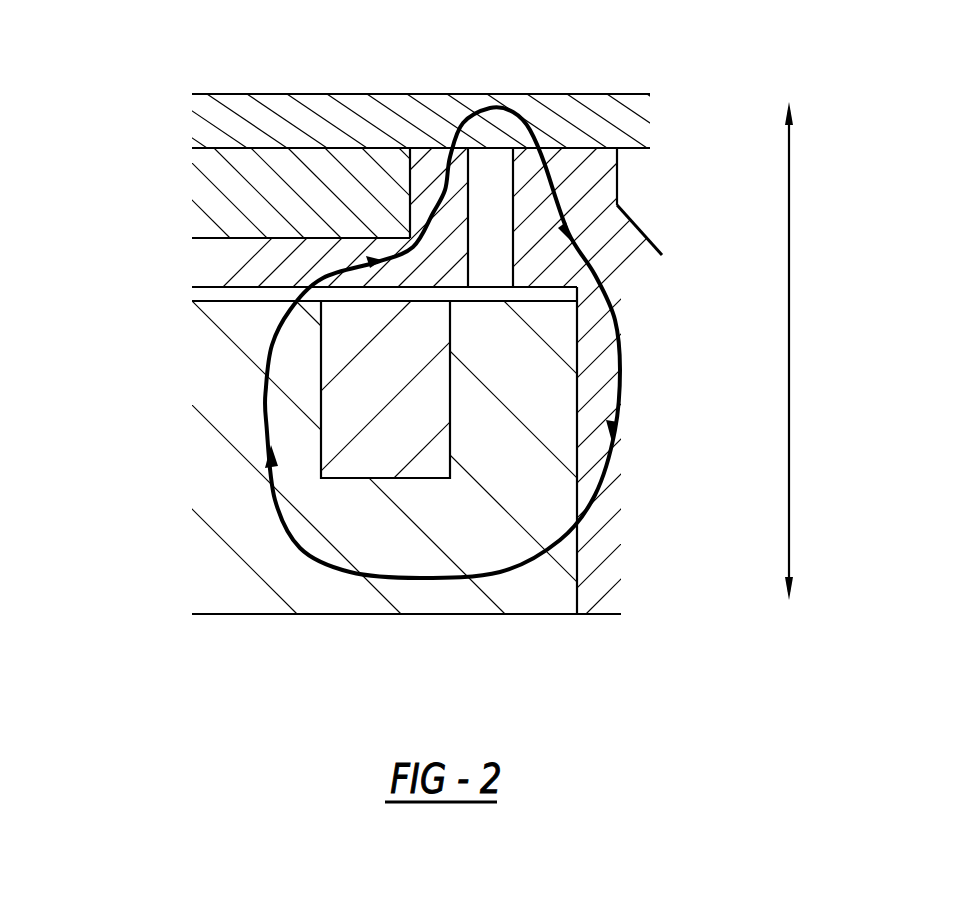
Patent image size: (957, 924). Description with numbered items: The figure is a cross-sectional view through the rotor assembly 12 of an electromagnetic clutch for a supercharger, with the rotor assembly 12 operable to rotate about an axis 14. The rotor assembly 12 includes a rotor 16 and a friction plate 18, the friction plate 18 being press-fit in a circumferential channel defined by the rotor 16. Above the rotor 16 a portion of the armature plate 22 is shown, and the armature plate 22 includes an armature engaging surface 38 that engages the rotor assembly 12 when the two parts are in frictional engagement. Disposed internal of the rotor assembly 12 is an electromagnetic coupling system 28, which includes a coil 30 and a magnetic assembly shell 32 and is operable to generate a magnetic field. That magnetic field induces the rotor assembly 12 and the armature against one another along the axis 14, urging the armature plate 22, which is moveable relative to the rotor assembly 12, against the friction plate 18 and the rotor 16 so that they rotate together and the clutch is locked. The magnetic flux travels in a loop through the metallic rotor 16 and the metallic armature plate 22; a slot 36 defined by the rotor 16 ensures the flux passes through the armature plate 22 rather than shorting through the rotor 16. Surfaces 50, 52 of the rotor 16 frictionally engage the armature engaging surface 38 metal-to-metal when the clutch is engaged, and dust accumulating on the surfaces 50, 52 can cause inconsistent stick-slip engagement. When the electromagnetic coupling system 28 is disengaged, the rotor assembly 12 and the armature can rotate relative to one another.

The rotor assembly 12 is at (152, 577).
The axis 14 is at (789, 265).
The rotor 16 is at (225, 258).
The friction plate 18 is at (217, 190).
The armature plate 22 is at (265, 115).
The electromagnetic coupling system 28 is at (243, 630).
The coil 30 is at (345, 384).
The magnetic assembly shell 32 is at (342, 593).
The slot 36 is at (468, 200).
The armature engaging surface 38 is at (210, 150).
The surface of the rotor 50 is at (563, 152).
The surface of the rotor 52 is at (427, 152).